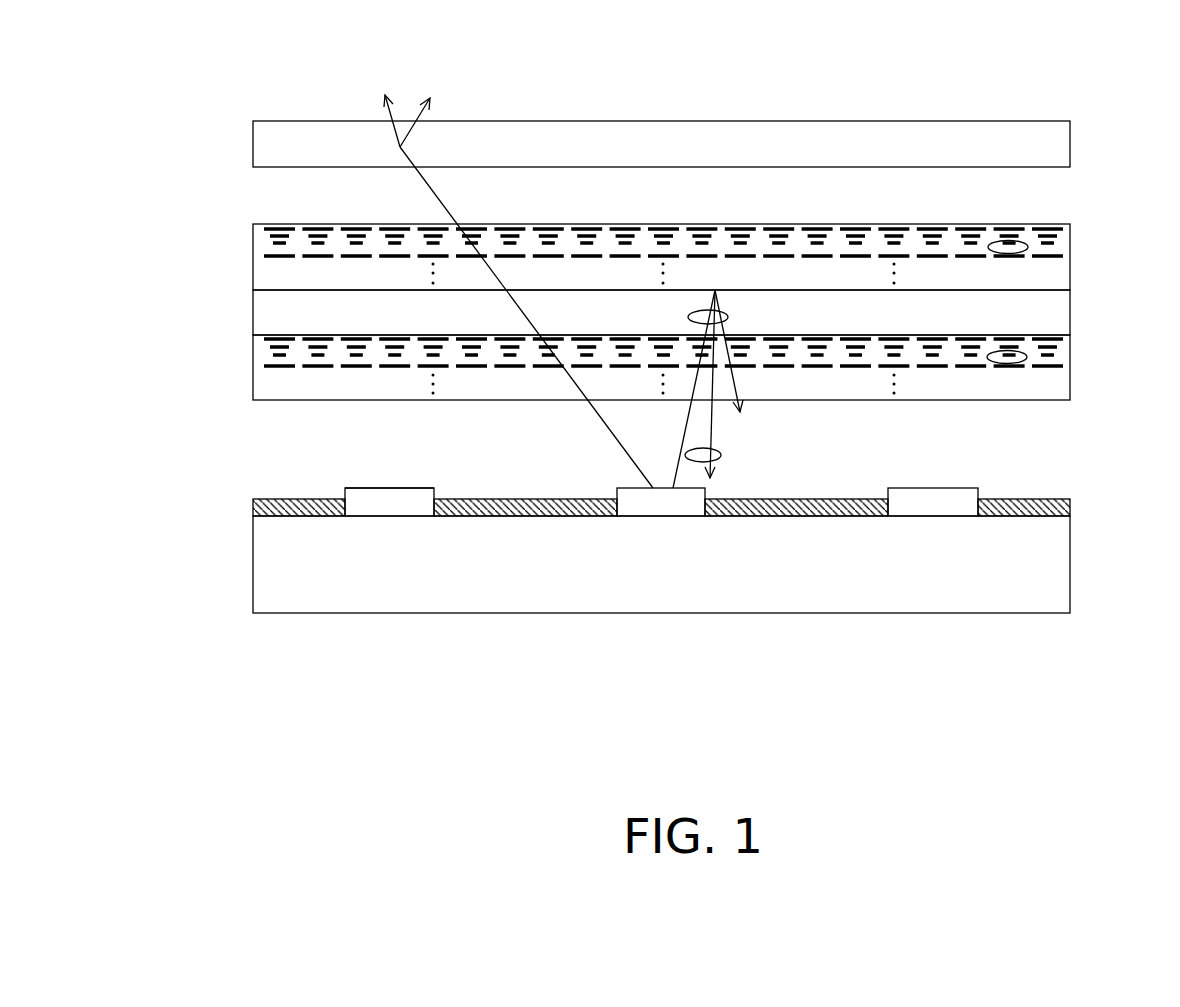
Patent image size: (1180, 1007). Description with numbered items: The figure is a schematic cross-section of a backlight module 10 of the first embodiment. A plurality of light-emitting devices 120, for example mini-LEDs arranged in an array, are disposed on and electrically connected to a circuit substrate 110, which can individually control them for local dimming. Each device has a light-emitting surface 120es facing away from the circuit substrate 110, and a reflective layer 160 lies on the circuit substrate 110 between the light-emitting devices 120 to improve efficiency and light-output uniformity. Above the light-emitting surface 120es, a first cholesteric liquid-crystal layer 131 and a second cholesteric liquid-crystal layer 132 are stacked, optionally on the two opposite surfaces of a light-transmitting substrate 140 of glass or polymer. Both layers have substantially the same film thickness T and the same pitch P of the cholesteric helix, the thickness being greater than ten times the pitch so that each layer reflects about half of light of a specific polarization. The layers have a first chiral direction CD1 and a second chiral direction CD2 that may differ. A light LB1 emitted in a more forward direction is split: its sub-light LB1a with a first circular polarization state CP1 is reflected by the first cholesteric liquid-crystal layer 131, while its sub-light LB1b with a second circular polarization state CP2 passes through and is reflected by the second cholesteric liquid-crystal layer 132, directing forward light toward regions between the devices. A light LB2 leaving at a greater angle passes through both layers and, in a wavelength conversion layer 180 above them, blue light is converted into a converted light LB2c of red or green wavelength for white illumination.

The backlight module 10 is at (1146, 695).
The circuit substrate 110 is at (1053, 585).
The light-emitting devices 120 is at (927, 498).
The light-emitting surface 120es is at (372, 488).
The first cholesteric liquid-crystal layer 131 is at (1048, 383).
The second cholesteric liquid-crystal layer 132 is at (1055, 272).
The light-transmitting substrate 140 is at (1055, 315).
The reflective layer 160 is at (1053, 505).
The wavelength conversion layer 180 is at (1060, 143).
The first chiral direction CD1 is at (993, 362).
The second chiral direction CD2 is at (1012, 248).
The first circular polarization state CP1 is at (723, 452).
The second circular polarization state CP2 is at (707, 310).
The light LB1 is at (652, 488).
The sub-light LB1a is at (698, 433).
The sub-light LB1b is at (718, 302).
The light LB2 is at (600, 429).
The converted light LB2c is at (424, 100).
The film thickness T is at (253, 400).
The pitch P is at (250, 367).